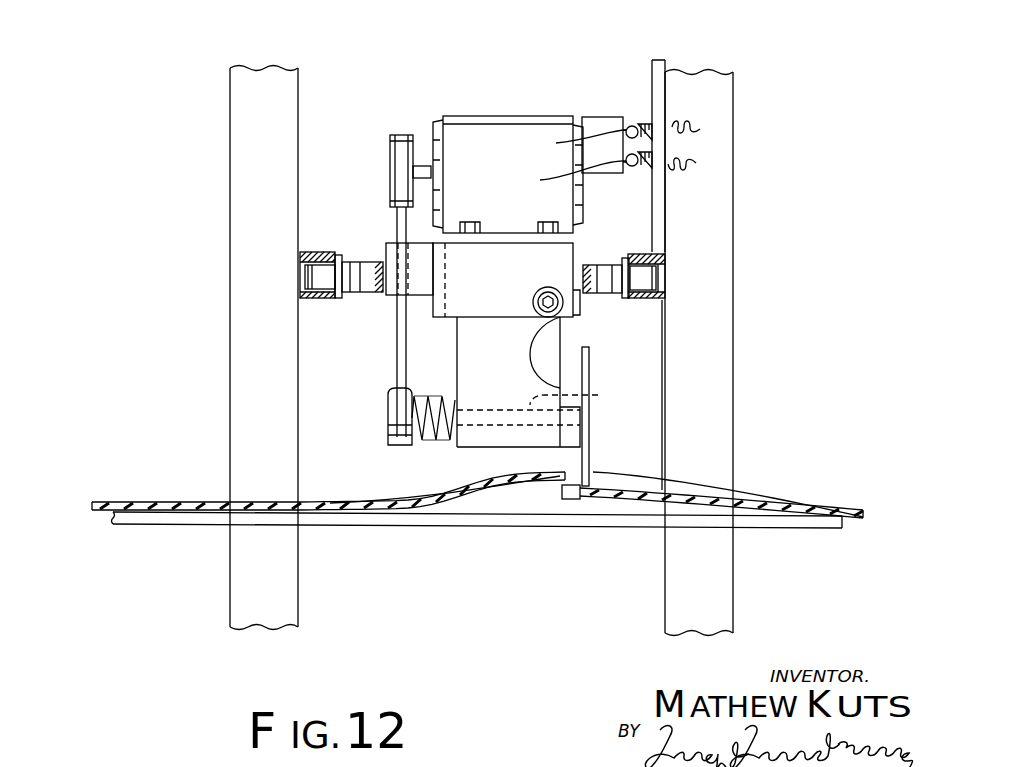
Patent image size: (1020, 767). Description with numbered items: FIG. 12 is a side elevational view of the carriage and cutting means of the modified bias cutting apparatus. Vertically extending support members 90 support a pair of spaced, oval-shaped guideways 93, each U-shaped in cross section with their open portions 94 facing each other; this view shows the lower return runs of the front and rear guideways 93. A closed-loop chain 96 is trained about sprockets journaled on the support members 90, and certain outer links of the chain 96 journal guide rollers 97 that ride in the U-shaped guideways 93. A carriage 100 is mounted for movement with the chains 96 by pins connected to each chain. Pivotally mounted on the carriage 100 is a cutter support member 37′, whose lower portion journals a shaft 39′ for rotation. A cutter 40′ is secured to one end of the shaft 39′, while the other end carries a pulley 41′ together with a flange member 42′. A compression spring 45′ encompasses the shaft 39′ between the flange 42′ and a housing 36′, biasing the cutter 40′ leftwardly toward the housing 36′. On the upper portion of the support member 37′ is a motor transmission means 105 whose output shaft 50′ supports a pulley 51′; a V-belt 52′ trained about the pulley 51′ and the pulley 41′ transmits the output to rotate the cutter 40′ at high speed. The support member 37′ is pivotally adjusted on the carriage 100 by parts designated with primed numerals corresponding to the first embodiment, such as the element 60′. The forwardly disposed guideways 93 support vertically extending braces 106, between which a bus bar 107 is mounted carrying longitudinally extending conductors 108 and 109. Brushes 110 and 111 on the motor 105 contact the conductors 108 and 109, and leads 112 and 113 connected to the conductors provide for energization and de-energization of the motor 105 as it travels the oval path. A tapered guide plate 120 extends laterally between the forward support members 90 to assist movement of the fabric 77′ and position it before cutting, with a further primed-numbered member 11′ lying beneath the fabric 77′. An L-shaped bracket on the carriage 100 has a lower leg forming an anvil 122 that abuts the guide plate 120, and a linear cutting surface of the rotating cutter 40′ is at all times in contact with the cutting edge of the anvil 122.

The carriage 100 is at (430, 98).
The motor transmission means 105 is at (483, 130).
The vertically extending brace 106 is at (660, 62).
The bus bar 107 is at (650, 143).
The conductor 108 is at (640, 122).
The conductor 109 is at (640, 172).
The brush 110 is at (563, 145).
The brush 111 is at (563, 182).
The lead 112 is at (672, 127).
The lead 113 is at (695, 165).
The output shaft 50′ is at (423, 165).
The pulley 51′ is at (390, 162).
The V-belt 52′ is at (392, 207).
The guideway 93 is at (315, 258).
The open portion 94 is at (305, 272).
The chain 96 is at (365, 290).
The guide roller 97 is at (320, 260).
The pivot block 60′ is at (542, 290).
The housing 36′ is at (455, 350).
The compression spring 45′ is at (446, 388).
The flange member 42′ is at (402, 380).
The pulley 41′ is at (390, 415).
The cutter 40′ is at (590, 355).
The shaft 39′ is at (593, 397).
The cutter support member 37′ is at (446, 456).
The fabric 77′ is at (165, 505).
The guide plate 120 is at (512, 512).
The anvil 122 is at (572, 500).
The base plate 11′ is at (840, 524).
The support member 90 is at (233, 590).